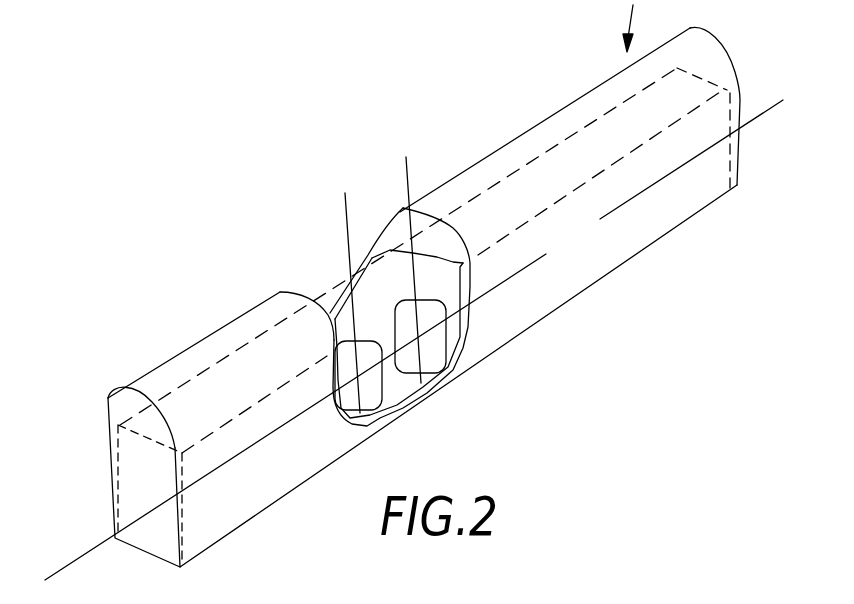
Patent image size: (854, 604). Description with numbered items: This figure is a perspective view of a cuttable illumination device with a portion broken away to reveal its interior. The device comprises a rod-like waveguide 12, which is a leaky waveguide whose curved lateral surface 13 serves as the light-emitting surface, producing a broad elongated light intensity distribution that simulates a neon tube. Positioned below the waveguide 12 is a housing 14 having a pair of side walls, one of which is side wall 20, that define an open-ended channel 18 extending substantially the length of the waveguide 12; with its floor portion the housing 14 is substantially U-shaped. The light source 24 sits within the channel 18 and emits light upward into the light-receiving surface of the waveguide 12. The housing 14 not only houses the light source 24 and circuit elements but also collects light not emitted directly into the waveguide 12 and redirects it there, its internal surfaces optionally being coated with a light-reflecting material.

The waveguide 12 is at (108, 398).
The curved lateral surface 13 is at (192, 347).
The housing 14 is at (107, 447).
The open-ended channel 18 is at (705, 77).
The side wall 20 is at (590, 255).
The light source 24 is at (437, 342).